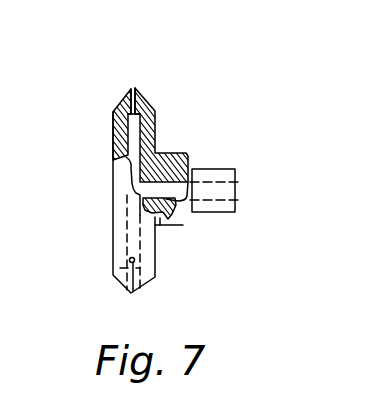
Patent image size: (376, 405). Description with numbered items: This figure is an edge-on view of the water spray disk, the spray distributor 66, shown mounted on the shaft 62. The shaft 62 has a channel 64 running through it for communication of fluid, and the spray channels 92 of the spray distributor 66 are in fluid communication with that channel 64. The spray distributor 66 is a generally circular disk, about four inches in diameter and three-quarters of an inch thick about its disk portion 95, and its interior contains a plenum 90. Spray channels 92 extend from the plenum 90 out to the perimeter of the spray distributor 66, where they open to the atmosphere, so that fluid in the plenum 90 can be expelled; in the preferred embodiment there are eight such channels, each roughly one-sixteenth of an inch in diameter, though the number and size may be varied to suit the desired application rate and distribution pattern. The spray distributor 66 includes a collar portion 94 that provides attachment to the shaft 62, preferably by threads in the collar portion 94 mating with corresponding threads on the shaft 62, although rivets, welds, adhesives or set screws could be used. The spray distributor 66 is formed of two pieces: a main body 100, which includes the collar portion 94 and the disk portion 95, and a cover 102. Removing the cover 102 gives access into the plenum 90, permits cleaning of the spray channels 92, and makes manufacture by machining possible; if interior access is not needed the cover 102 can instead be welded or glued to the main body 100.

The spray distributor 66 is at (160, 84).
The cover 102 is at (116, 132).
The main body 100 is at (157, 116).
The plenum 90 is at (136, 145).
The spray channels 92 is at (131, 89).
The collar portion 94 is at (182, 218).
The disk portion 95 is at (113, 257).
The shaft 62 is at (218, 169).
The channel 64 is at (235, 188).